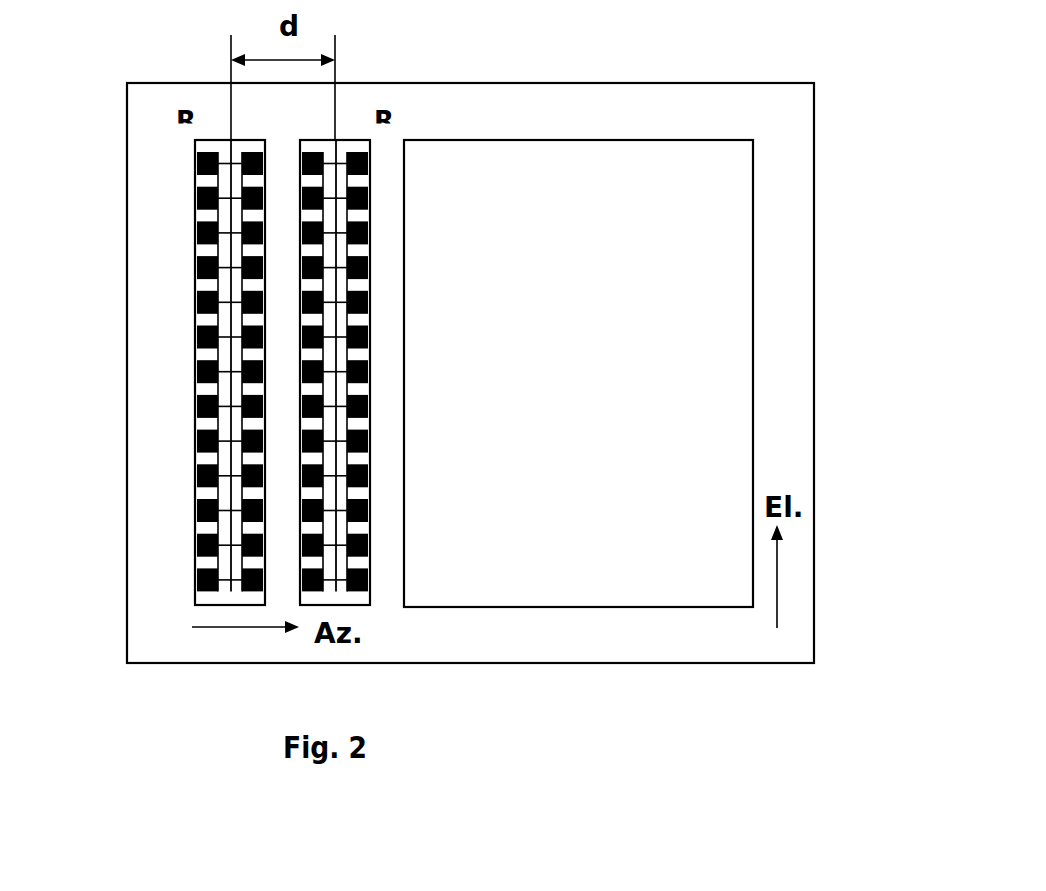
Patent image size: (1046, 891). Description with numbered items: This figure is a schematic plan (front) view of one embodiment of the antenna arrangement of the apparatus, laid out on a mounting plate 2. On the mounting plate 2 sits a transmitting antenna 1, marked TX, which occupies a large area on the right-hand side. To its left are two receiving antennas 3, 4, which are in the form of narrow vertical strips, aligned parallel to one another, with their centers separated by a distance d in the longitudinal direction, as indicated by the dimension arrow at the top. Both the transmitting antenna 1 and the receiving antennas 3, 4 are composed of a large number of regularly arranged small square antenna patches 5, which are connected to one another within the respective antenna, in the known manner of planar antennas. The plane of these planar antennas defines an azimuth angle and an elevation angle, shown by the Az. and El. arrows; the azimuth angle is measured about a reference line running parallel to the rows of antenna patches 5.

The transmitting antenna 1 is at (740, 426).
The mounting plate 2 is at (797, 262).
The receiving antenna 3 is at (186, 293).
The receiving antenna 4 is at (390, 290).
The antenna patch 5 is at (200, 493).